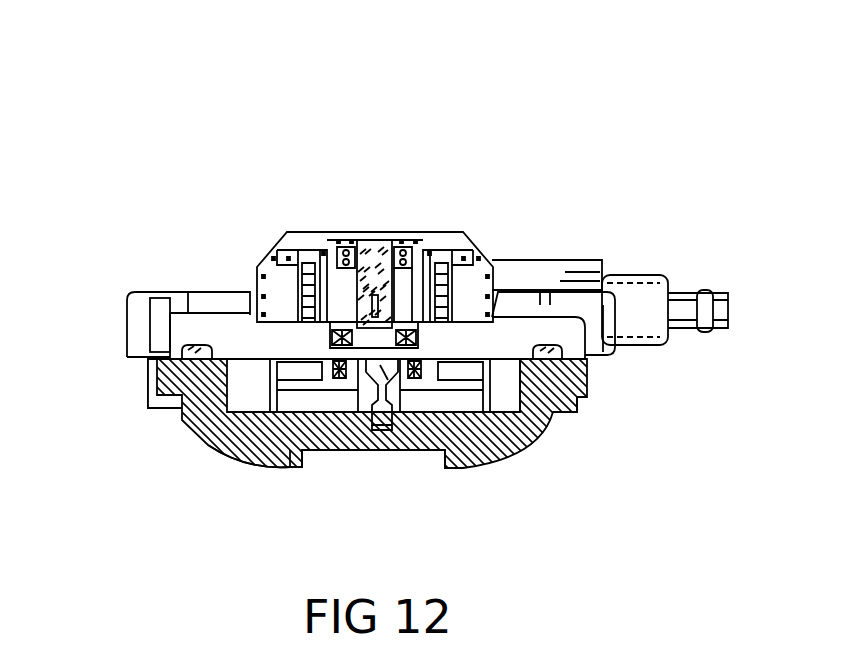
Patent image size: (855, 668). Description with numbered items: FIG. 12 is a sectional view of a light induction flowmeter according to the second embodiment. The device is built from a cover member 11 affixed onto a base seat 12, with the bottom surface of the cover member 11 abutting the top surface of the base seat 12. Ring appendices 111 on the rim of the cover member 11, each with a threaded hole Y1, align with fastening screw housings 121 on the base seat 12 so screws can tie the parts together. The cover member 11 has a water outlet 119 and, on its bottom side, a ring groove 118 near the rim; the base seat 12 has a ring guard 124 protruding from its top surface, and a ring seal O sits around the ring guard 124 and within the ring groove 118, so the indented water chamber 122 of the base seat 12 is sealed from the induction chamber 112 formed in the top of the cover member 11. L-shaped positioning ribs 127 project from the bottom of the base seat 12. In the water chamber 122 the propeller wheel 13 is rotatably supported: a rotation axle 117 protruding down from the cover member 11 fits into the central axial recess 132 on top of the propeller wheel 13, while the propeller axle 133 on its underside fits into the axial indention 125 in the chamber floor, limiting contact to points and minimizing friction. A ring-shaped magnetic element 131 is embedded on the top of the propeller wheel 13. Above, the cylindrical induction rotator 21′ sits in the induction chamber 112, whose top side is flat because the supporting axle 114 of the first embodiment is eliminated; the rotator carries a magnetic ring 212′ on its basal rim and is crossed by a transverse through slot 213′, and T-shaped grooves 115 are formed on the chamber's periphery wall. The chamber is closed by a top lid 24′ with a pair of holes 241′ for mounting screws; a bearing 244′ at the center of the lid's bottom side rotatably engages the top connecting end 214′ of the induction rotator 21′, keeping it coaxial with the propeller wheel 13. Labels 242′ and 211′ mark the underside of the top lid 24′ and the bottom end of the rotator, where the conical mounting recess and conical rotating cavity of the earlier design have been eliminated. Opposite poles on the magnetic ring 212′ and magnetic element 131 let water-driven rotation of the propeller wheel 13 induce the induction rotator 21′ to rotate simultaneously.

The top lid 24′ is at (376, 262).
The top connecting end 214′ is at (358, 255).
The seal ring 242′ is at (337, 258).
The T-shaped grooves 115 is at (318, 262).
The holes 241′ is at (300, 262).
The induction rotator 21′ is at (266, 262).
The transverse rotator through slot 213′ is at (362, 292).
The magnetic ring 212′ is at (365, 318).
The bearing 244′ is at (393, 258).
The induction chamber 112 is at (412, 262).
The supporting axle 114 is at (407, 292).
The lower holder 211′ is at (388, 338).
The threaded hole Y1 is at (160, 308).
The ring appendix 111 is at (138, 332).
The fastening screw housing 121 is at (148, 408).
The water chamber 122 is at (208, 445).
The L-shaped positioning rib 127 is at (277, 455).
The axial indention 125 is at (357, 450).
The propeller wheel 13 is at (515, 432).
The ring-shaped magnetic element 131 is at (442, 387).
The central axial recess 132 is at (432, 392).
The rotation axle 117 is at (405, 398).
The propeller axle 133 is at (390, 425).
The water outlet 119 is at (730, 310).
The cover member 11 is at (568, 332).
The ring seal O is at (570, 358).
The ring groove 118 is at (578, 375).
The base seat 12 is at (570, 420).
The ring guard 124 is at (560, 430).